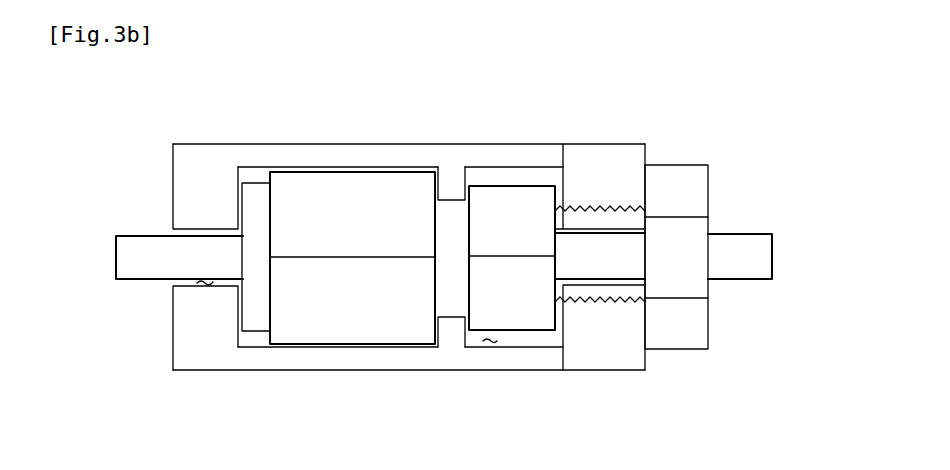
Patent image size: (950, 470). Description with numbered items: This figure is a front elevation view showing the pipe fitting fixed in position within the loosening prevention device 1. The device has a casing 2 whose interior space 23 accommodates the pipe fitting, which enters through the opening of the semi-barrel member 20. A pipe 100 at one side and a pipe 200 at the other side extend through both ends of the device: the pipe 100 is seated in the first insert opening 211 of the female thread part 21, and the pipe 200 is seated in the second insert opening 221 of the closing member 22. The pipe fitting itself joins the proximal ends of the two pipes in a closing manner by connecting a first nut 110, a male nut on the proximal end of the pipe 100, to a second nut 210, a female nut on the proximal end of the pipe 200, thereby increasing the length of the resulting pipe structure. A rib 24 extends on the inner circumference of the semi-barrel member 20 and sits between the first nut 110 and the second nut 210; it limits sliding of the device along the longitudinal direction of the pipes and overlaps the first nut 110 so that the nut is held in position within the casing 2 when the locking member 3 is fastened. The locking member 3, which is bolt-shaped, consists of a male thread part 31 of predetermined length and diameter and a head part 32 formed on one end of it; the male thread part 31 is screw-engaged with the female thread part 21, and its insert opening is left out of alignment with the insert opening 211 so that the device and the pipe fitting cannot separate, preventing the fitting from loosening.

The loosening prevention device 1 is at (226, 106).
The casing 2 is at (352, 155).
The semi-barrel member 20 is at (398, 362).
The female thread part 21 is at (599, 346).
The first insert opening 211 is at (591, 230).
The closing member 22 is at (209, 326).
The second insert opening 221 is at (200, 292).
The interior space 23 is at (489, 343).
The rib 24 is at (459, 181).
The locking member 3 is at (676, 185).
The male thread part 31 is at (557, 303).
The head part 32 is at (683, 330).
The pipe at one side 100 is at (749, 257).
The first nut 110 is at (526, 267).
The pipe at the other side 200 is at (130, 255).
The second nut 210 is at (344, 267).